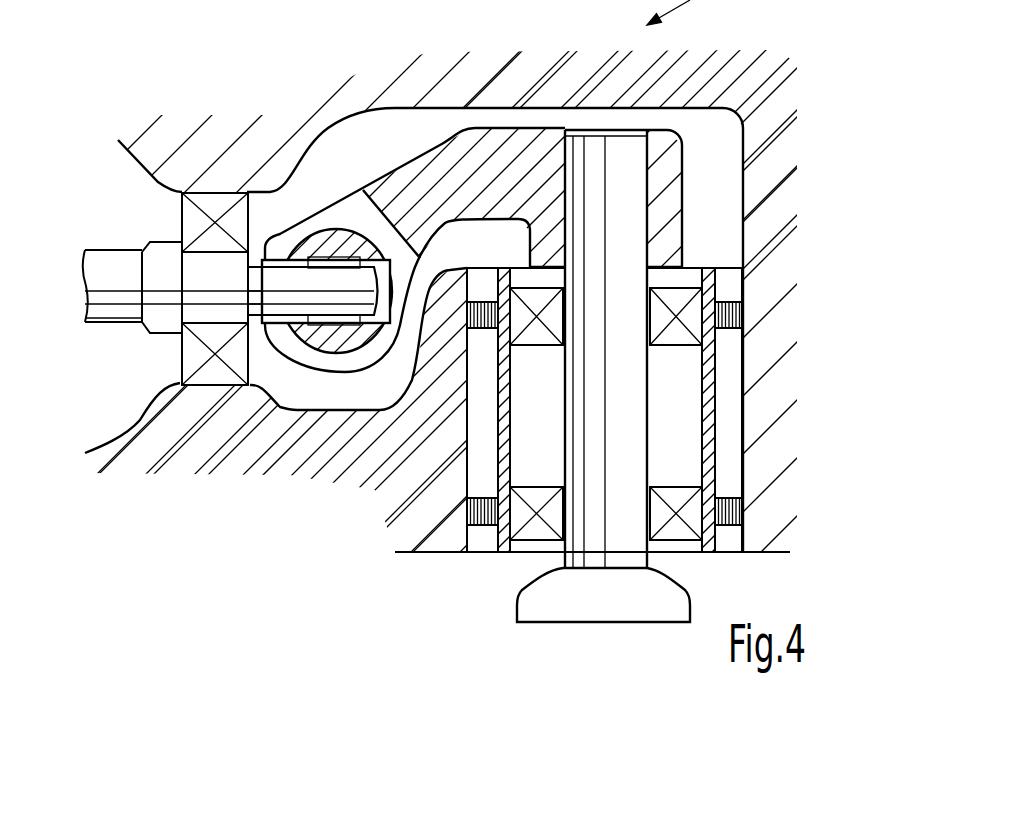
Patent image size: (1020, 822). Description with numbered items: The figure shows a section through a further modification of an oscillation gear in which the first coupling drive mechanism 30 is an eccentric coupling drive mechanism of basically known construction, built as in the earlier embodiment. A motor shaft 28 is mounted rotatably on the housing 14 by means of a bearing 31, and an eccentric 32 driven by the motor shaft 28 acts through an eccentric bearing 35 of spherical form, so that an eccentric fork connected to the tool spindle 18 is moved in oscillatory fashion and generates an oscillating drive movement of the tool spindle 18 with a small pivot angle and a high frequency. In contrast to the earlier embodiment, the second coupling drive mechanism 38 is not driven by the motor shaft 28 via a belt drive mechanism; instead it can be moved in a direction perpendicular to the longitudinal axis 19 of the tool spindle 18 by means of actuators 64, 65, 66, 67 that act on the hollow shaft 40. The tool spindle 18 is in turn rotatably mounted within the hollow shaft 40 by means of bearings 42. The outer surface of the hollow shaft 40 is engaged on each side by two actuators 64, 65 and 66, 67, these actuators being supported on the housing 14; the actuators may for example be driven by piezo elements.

The housing 14 is at (265, 152).
The tool spindle 18 is at (626, 186).
The longitudinal axis 19 is at (612, 428).
The motor shaft 28 is at (120, 268).
The first coupling drive mechanism 30 is at (398, 150).
The bearing 31 is at (217, 205).
The eccentric 32 is at (288, 283).
The eccentric bearing 35 is at (328, 242).
The second coupling drive mechanism 38 is at (467, 572).
The hollow shaft 40 is at (700, 352).
The bearings 42 is at (673, 528).
The actuator 64 is at (745, 290).
The actuator 65 is at (740, 510).
The actuator 66 is at (480, 308).
The actuator 67 is at (473, 510).